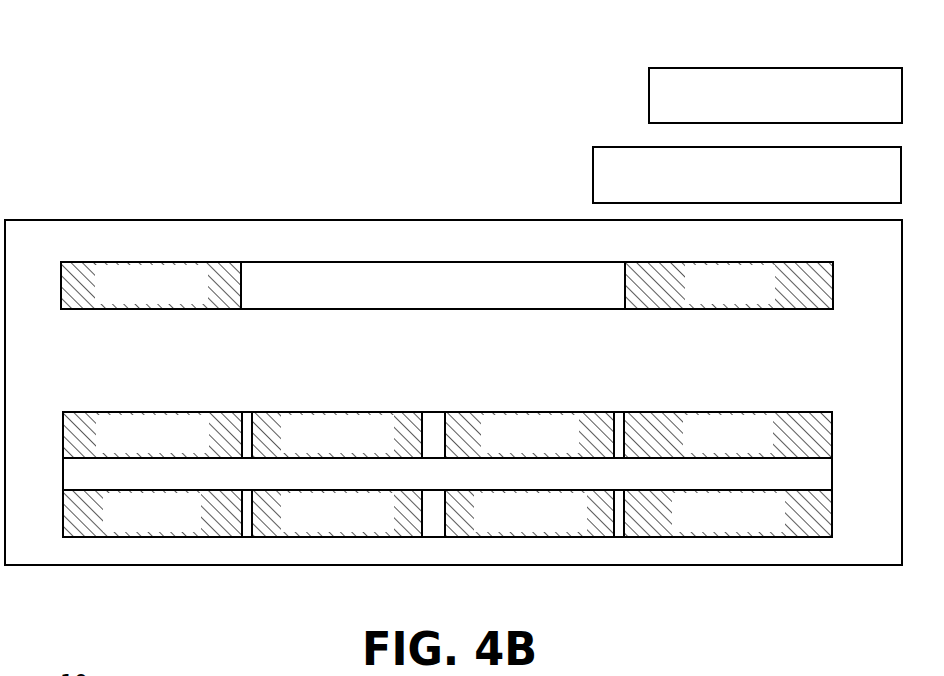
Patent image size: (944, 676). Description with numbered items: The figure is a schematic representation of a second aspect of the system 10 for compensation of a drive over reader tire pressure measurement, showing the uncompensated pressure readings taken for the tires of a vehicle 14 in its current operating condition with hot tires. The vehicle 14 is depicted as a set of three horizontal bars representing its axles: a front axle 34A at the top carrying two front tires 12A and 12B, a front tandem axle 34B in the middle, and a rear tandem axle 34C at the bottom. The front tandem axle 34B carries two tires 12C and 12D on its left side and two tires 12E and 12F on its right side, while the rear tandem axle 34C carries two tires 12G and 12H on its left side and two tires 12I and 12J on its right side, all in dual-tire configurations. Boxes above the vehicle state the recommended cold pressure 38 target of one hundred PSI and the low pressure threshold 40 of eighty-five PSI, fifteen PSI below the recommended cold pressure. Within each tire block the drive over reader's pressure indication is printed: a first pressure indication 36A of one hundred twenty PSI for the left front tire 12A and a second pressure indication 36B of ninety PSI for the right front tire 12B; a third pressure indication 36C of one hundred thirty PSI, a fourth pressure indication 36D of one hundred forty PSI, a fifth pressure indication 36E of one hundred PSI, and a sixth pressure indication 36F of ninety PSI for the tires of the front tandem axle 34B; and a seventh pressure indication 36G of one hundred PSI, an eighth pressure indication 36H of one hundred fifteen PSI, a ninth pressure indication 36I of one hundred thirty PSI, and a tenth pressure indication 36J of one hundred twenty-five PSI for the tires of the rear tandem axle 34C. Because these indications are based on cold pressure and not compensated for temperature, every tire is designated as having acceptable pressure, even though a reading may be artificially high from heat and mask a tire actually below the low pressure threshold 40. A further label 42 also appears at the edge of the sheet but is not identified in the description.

The system for compensation of a drive over reader tire pressure measurement 10 is at (131, 98).
The vehicle 14 is at (268, 220).
The recommended cold pressure 38 is at (672, 68).
The low pressure threshold 40 is at (613, 147).
The indicator 42 is at (676, 675).
The front tire 12A is at (172, 312).
The front tire 12B is at (694, 311).
The tire 12C is at (101, 409).
The tire 12D is at (283, 409).
The tire 12E is at (510, 409).
The tire 12F is at (784, 409).
The tire 12G is at (136, 540).
The tire 12H is at (338, 540).
The tire 12I is at (549, 541).
The tire 12J is at (696, 540).
The front axle 34A is at (393, 309).
The front tandem axle 34B is at (405, 412).
The rear tandem axle 34C is at (435, 537).
The first pressure indication 36A is at (143, 300).
The second pressure indication 36B is at (733, 300).
The third pressure indication 36C is at (150, 425).
The fourth pressure indication 36D is at (320, 425).
The fifth pressure indication 36E is at (540, 425).
The sixth pressure indication 36F is at (733, 428).
The seventh pressure indication 36G is at (174, 537).
The eighth pressure indication 36H is at (325, 527).
The ninth pressure indication 36I is at (522, 530).
The tenth pressure indication 36J is at (737, 523).